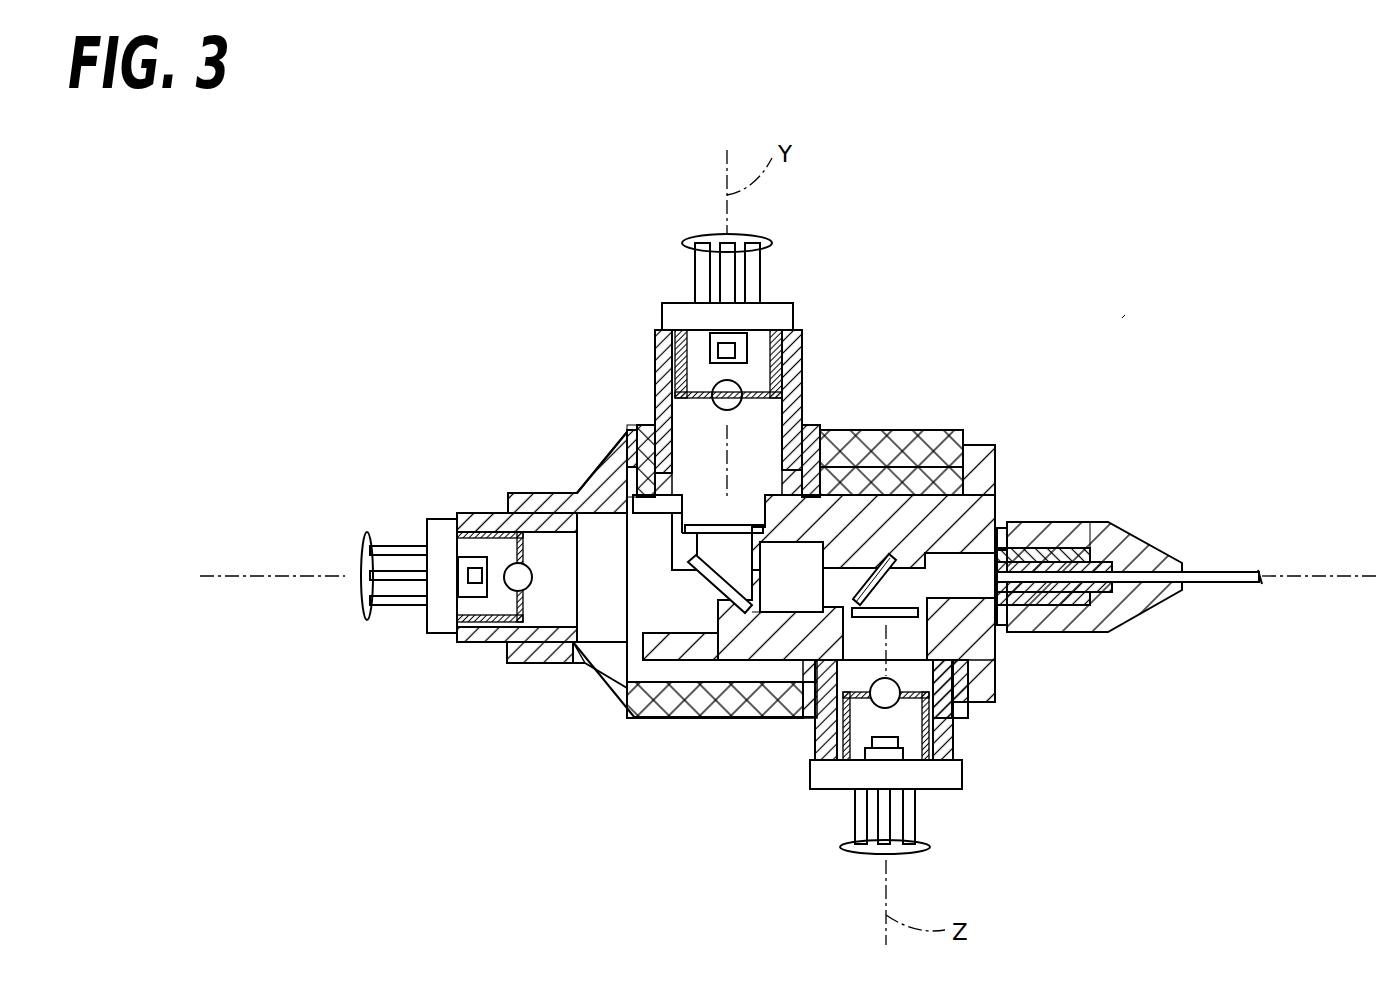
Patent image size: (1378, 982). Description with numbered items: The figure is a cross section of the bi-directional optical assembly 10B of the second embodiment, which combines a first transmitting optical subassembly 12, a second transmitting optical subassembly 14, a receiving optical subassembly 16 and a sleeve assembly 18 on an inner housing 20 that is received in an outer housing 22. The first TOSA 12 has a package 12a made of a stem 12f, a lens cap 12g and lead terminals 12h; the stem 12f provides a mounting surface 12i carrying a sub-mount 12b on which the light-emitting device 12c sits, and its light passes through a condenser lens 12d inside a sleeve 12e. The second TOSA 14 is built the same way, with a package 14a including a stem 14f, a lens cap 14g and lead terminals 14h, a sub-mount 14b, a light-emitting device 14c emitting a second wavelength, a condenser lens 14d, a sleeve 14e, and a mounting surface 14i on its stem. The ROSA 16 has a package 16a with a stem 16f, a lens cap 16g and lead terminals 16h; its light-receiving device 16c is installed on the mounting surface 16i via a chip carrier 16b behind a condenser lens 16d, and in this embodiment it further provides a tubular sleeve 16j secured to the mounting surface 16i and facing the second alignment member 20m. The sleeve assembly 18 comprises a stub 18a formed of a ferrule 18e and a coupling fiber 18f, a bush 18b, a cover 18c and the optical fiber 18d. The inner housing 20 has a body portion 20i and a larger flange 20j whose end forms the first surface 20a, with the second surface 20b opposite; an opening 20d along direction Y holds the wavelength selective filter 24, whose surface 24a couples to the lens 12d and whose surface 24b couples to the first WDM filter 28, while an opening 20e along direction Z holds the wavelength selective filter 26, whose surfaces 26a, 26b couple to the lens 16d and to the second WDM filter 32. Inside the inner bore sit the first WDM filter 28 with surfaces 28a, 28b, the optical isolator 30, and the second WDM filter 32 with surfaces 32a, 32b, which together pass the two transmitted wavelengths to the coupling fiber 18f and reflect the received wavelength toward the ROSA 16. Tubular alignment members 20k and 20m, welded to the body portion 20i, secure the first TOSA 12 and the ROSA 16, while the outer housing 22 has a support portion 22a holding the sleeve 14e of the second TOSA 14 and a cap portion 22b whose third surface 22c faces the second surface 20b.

The bi-directional optical assembly 10B is at (1125, 315).
The first transmitting optical subassembly 12 is at (654, 242).
The package 12a is at (840, 195).
The sub-mount 12b is at (724, 338).
The light-emitting device 12c is at (716, 388).
The condenser lens 12d is at (690, 396).
The sleeve 12e is at (790, 362).
The stem 12f is at (763, 303).
The lens cap 12g is at (795, 327).
The lead terminal 12h is at (745, 237).
The mounting surface 12i is at (727, 350).
The second transmitting optical subassembly 14 is at (432, 648).
The package 14a is at (457, 440).
The sub-mount 14b is at (460, 640).
The light-emitting device 14c is at (483, 600).
The condenser lens 14d is at (522, 656).
The sleeve 14e is at (500, 512).
The stem 14f is at (440, 527).
The lens cap 14g is at (483, 533).
The lead terminals 14h is at (372, 552).
The laser chip 14i is at (472, 582).
The receiving optical subassembly 16 is at (806, 794).
The package 16a is at (1052, 780).
The chip carrier 16b is at (860, 758).
The light-receiving device 16c is at (818, 737).
The condenser lens 16d is at (893, 697).
The stem 16f is at (960, 778).
The lens cap 16g is at (938, 775).
The lead terminals 16h is at (920, 850).
The mounting surface 16i is at (866, 752).
The sleeve 16j is at (814, 748).
The sleeve assembly 18 is at (1190, 655).
The stub 18a is at (1192, 690).
The bush 18b is at (1073, 553).
The cover 18c is at (1160, 600).
The optical fiber 18d is at (1245, 570).
The ferrule 18e is at (1125, 612).
The coupling fiber 18f is at (1083, 605).
The inner housing 20 is at (1000, 497).
The first surface 20a is at (998, 495).
The second surface 20b is at (990, 470).
The opening 20d is at (745, 500).
The opening 20e is at (760, 662).
The body portion 20i is at (937, 500).
The flange 20j is at (990, 448).
The first alignment member 20k is at (815, 432).
The second alignment member 20m is at (840, 640).
The outer housing 22 is at (592, 705).
The support portion 22a is at (560, 702).
The cap portion 22b is at (698, 700).
The third surface 22c is at (968, 443).
The wavelength selective filter 24 is at (545, 365).
The surface of wavelength selective filter 24a is at (645, 440).
The other surface of wavelength selective filter 24b is at (627, 455).
The wavelength selective filter 26 is at (1052, 675).
The inner ring 26a is at (965, 705).
The surface of wavelength selective filter 26b is at (970, 680).
The first WDM filter 28 is at (682, 776).
The surface of first WDM filter 28a is at (722, 610).
The other surface of first WDM filter 28b is at (690, 600).
The optical isolator 30 is at (810, 540).
The second WDM filter 32 is at (1008, 283).
The surface of second WDM filter 32a is at (900, 555).
The mirror face 32b is at (878, 555).